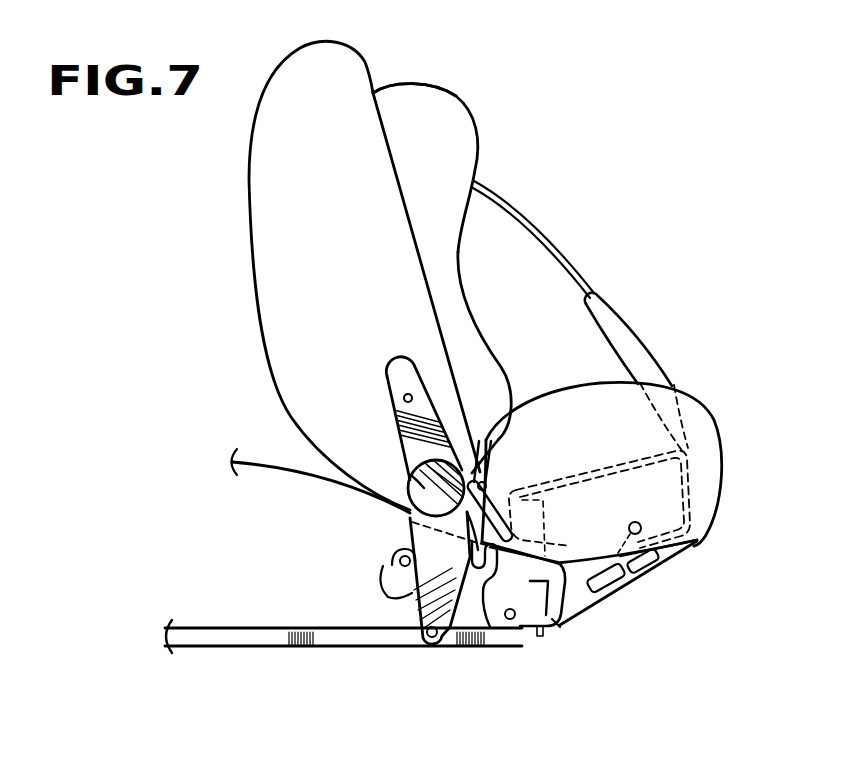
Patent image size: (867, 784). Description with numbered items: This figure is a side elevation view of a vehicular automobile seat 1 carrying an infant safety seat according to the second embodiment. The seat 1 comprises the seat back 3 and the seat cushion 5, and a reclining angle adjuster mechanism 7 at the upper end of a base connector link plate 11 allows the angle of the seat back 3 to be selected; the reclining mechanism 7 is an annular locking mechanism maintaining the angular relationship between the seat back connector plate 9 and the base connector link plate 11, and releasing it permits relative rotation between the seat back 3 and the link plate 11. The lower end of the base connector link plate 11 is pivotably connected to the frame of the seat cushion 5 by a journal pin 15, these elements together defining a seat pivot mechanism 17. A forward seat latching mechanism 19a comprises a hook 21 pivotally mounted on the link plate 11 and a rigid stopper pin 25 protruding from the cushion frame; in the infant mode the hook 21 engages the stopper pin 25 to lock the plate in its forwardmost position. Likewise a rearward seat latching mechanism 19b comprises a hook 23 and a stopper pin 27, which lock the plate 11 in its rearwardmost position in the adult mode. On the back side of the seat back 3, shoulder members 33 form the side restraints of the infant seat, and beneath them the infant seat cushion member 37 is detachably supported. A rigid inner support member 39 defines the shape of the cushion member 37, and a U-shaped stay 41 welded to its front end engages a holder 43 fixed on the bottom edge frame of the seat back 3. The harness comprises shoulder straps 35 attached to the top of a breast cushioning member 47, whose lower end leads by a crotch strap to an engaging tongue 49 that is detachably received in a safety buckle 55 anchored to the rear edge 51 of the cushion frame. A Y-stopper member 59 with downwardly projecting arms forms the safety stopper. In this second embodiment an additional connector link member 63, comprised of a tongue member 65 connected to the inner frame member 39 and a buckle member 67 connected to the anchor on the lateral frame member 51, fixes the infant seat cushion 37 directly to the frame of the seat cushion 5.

The automobile seat 1 is at (445, 86).
The seat back 3 is at (263, 237).
The seat cushion 5 is at (254, 478).
The reclining angle adjuster mechanism 7 is at (412, 470).
The seat back connector plate 9 is at (393, 380).
The base connector link plate 11 is at (421, 608).
The journal pin 15 is at (430, 642).
The seat pivot mechanism 17 is at (455, 634).
The forward seat latching mechanism 19a is at (329, 588).
The rearward seat latching mechanism 19b is at (470, 633).
The hook 21 is at (385, 598).
The hook 23 is at (510, 624).
The stopper pin 25 is at (398, 566).
The stopper pin 27 is at (514, 645).
The shoulder members 33 is at (462, 157).
The infant restraining harness shoulder straps 35 is at (573, 261).
The infant seat cushion member 37 is at (711, 408).
The inner support member 39 is at (690, 481).
The U-shaped stay 41 is at (502, 493).
The holder 43 is at (488, 490).
The breast cushioning member 47 is at (655, 353).
The engaging tongue 49 is at (700, 550).
The rear edge 51 is at (558, 627).
The safety buckle 55 is at (664, 565).
The Y-stopper member 59 is at (551, 504).
The connector link member 63 is at (639, 633).
The tongue member 65 is at (622, 590).
The buckle member 67 is at (612, 594).